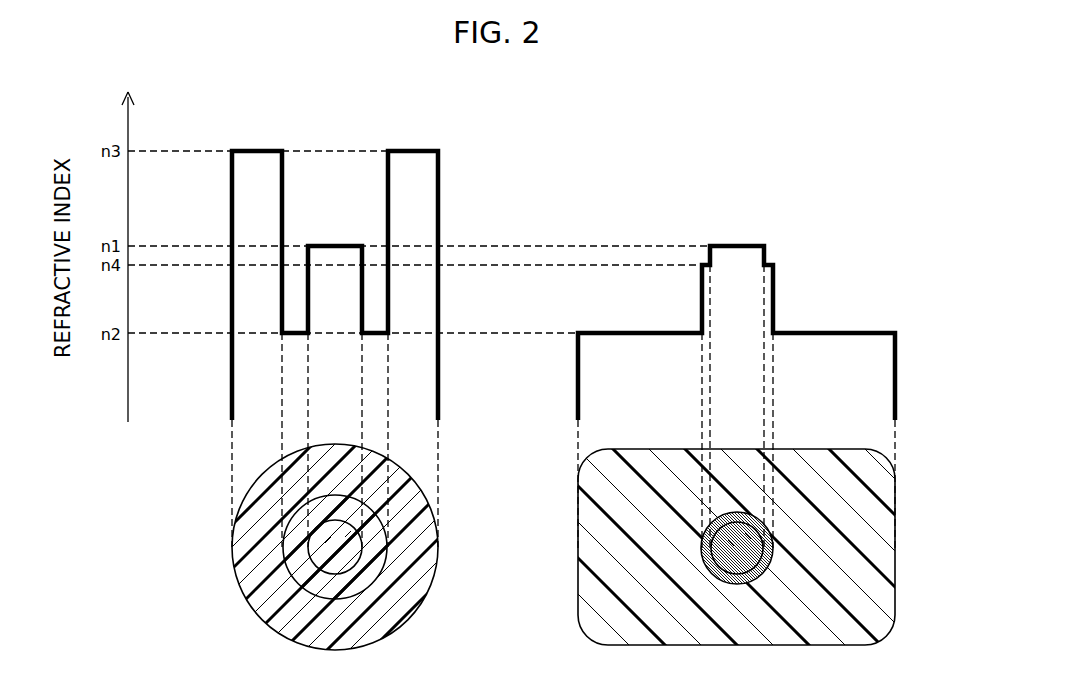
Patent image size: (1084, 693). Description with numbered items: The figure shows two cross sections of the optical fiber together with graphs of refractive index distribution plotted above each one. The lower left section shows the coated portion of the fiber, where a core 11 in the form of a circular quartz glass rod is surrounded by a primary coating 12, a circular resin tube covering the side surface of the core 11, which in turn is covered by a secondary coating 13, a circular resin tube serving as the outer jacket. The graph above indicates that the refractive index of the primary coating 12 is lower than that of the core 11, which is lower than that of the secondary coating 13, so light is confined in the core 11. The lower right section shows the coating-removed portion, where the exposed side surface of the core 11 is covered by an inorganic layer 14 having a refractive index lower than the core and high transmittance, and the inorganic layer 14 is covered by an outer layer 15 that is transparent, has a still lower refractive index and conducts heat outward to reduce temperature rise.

The core 11 is at (310, 548).
The primary coating 12 is at (362, 548).
The secondary coating 13 is at (245, 597).
The inorganic layer 14 is at (702, 548).
The outer layer 15 is at (578, 597).